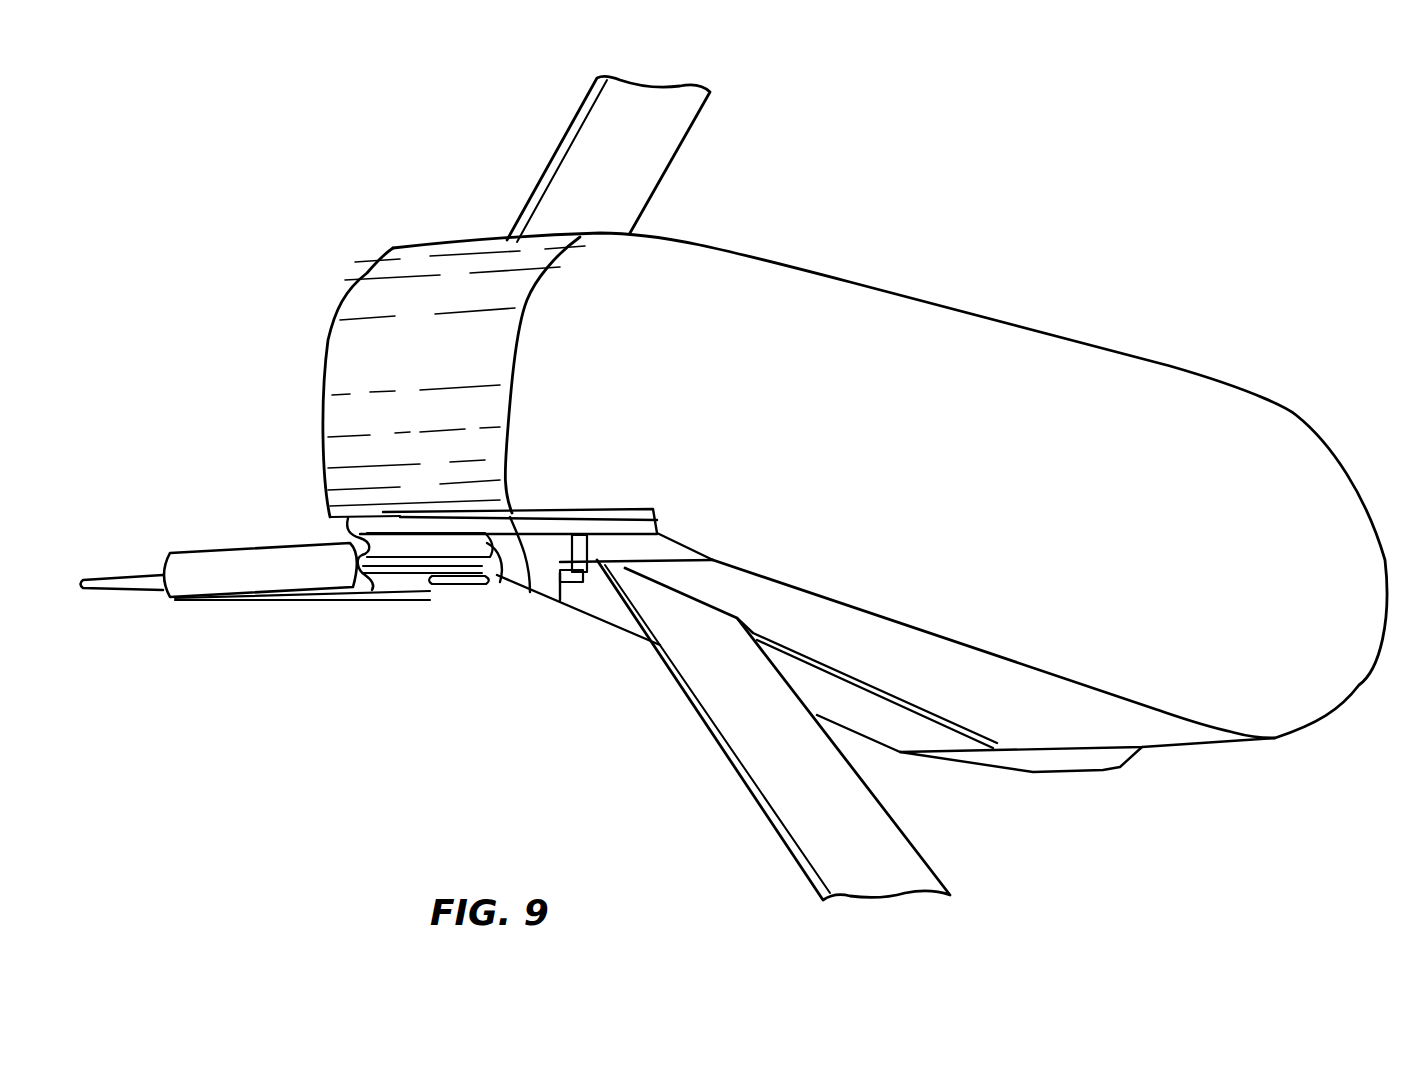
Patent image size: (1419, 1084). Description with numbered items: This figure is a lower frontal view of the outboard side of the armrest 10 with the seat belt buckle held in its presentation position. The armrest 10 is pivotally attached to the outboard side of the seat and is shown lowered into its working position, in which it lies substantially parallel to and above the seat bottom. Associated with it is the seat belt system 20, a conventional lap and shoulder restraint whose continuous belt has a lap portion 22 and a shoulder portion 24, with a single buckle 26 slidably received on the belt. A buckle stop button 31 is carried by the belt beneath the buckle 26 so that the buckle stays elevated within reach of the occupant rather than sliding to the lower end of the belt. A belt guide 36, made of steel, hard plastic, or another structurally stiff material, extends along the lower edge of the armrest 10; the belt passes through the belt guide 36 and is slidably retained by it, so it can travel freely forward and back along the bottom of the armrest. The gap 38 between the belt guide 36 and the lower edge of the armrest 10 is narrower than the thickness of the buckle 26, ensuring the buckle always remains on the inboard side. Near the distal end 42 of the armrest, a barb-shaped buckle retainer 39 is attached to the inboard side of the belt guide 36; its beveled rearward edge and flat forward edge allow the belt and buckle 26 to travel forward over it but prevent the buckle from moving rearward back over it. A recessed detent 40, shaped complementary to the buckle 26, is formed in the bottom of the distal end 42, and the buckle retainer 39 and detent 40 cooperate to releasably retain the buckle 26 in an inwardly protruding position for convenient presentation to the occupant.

The armrest 10 is at (815, 407).
The seat belt system 20 is at (283, 728).
The lap portion 22 is at (717, 738).
The shoulder portion 24 is at (548, 164).
The buckle 26 is at (170, 600).
The buckle stop button 31 is at (423, 608).
The belt guide 36 is at (970, 758).
The gap 38 is at (1033, 755).
The buckle retainer 39 is at (465, 600).
The recessed detent 40 is at (533, 593).
The distal end 42 is at (447, 371).